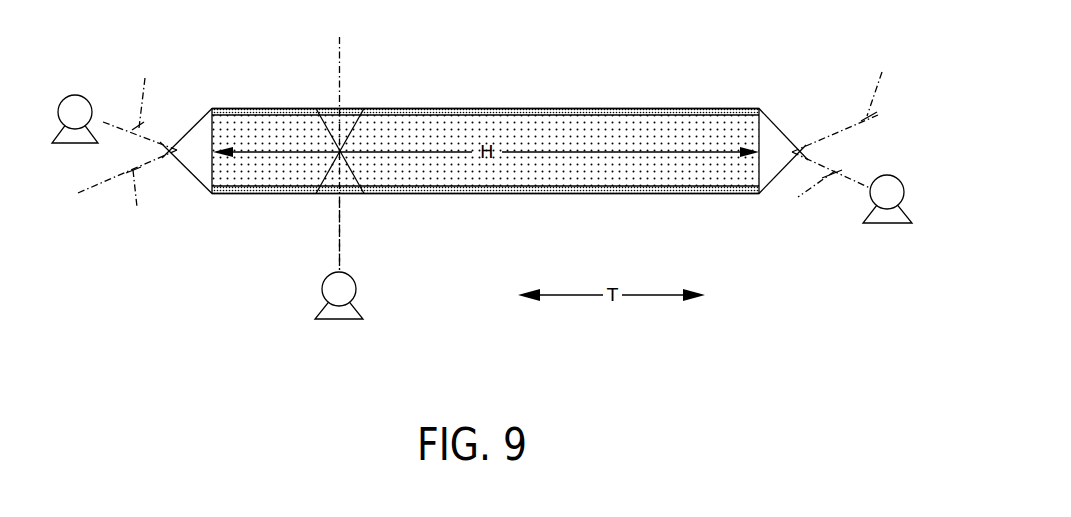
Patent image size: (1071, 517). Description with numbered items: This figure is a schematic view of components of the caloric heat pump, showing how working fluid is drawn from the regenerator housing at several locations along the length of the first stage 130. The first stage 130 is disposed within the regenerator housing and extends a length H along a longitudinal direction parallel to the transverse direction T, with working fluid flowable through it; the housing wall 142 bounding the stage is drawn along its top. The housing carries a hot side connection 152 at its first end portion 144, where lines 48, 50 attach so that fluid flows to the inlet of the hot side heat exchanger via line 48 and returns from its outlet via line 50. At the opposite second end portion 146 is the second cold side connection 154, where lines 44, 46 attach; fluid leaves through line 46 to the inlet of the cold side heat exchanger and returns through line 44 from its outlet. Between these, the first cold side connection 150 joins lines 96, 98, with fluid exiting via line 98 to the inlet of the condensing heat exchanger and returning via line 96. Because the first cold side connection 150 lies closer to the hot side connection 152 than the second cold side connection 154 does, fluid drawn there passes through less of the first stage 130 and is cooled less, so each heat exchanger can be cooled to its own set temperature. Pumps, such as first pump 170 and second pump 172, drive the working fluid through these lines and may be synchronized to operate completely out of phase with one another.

The first stage 130 is at (362, 138).
The top surface 142 is at (497, 109).
The first cold side connection 150 is at (347, 182).
The first end portion 144 is at (758, 91).
The second end portion 146 is at (220, 91).
The hot side connection 152 is at (778, 131).
The second cold side connection 154 is at (203, 163).
The line 46 is at (343, 82).
The line 44 is at (330, 238).
The line 96 is at (140, 102).
The line 98 is at (127, 191).
The line 48 is at (855, 103).
The line 50 is at (826, 188).
The second pump 172 is at (73, 104).
The first pump 170 is at (887, 183).